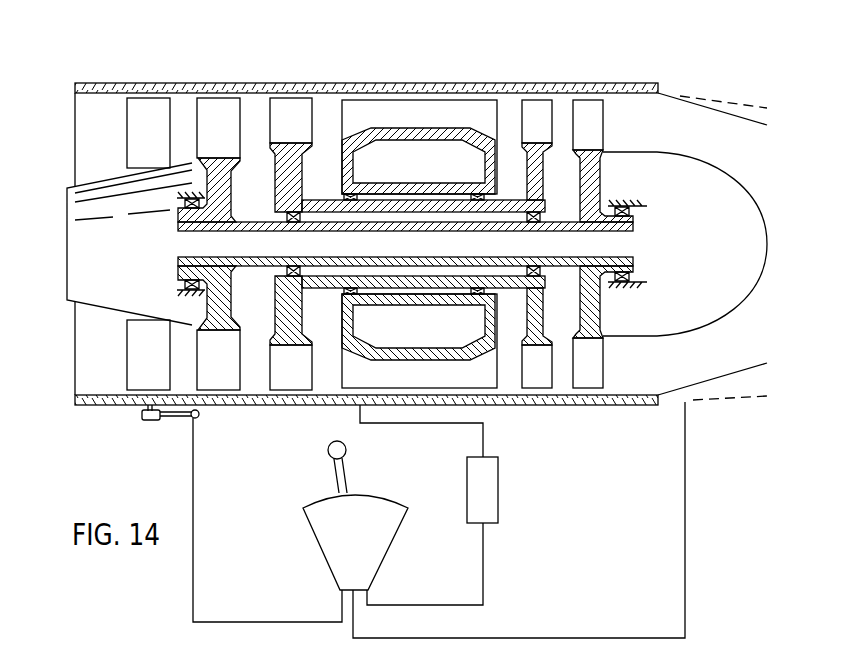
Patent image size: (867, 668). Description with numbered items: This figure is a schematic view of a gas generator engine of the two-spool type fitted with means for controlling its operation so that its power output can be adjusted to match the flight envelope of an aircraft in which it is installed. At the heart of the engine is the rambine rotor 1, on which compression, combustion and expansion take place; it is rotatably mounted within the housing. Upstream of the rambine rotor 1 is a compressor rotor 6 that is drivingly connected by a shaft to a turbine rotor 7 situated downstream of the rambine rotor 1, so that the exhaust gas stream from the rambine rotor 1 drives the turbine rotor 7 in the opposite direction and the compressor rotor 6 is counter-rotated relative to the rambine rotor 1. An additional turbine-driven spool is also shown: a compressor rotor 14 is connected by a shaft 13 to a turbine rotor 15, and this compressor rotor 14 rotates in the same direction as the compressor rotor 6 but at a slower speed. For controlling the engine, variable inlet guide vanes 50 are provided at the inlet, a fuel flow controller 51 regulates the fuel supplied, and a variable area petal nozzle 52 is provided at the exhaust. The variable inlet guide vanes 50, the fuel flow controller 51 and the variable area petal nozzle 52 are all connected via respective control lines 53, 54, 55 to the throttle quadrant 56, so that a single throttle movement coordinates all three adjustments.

The rambine rotor 1 is at (396, 142).
The compressor rotor 6 is at (303, 173).
The turbine rotor 7 is at (550, 158).
The shaft 13 is at (547, 222).
The compressor rotor 14 is at (227, 183).
The turbine rotor 15 is at (607, 150).
The variable inlet guide vanes 50 is at (123, 347).
The fuel flow controller 51 is at (498, 485).
The variable area petal nozzle 52 is at (723, 390).
The control line 53 is at (195, 457).
The control line 54 is at (483, 565).
The control line 55 is at (685, 548).
The throttle quadrant 56 is at (317, 540).